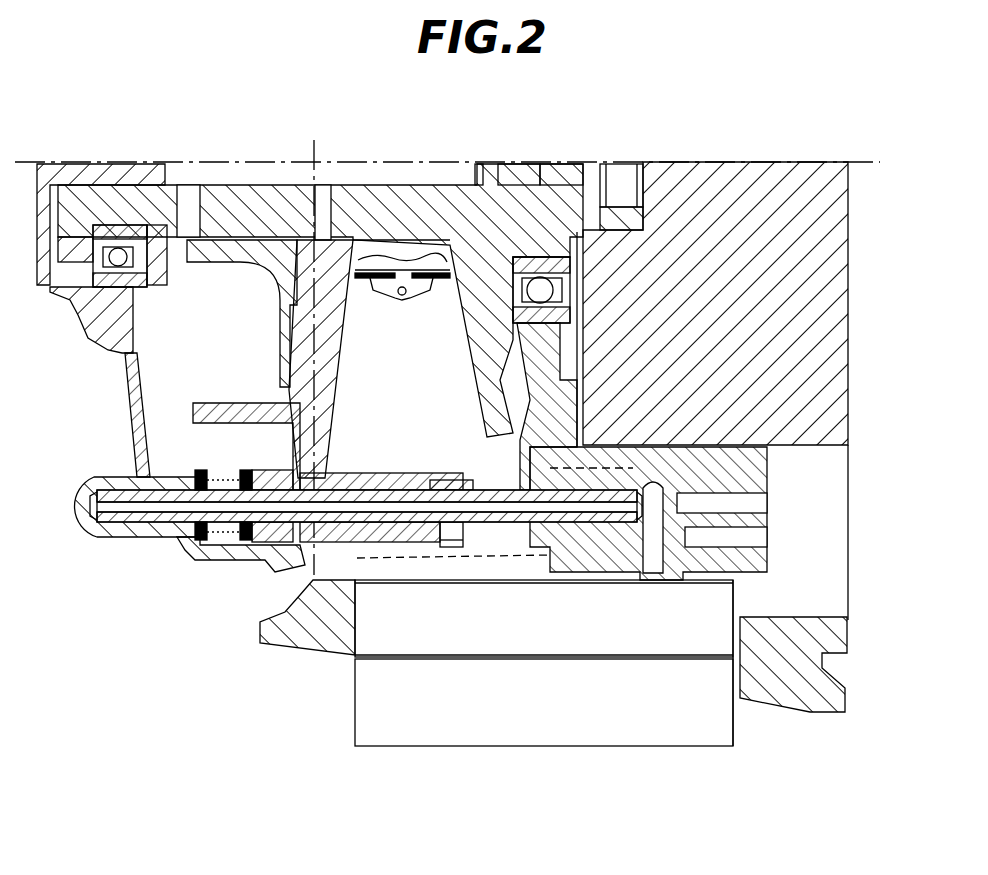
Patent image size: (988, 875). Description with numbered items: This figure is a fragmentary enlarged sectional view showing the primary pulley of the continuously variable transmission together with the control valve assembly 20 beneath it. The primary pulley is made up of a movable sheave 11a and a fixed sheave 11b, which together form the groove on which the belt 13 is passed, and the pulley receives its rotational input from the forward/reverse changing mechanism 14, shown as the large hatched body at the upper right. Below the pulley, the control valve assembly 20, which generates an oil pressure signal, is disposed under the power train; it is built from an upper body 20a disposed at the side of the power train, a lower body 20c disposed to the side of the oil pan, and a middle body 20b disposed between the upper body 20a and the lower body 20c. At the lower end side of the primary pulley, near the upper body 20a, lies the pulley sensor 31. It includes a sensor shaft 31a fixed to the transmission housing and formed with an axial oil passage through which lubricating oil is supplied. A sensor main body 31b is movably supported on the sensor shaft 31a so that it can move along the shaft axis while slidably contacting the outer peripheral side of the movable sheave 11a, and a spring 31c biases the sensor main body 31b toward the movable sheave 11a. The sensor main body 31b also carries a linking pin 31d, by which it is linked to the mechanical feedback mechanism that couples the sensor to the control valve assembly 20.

The forward/reverse changing mechanism 14 is at (833, 241).
The belt 13 is at (402, 297).
The movable sheave 11a is at (330, 388).
The fixed sheave 11b is at (475, 350).
The pulley sensor 31 is at (502, 538).
The sensor shaft 31a is at (520, 482).
The sensor main body 31b is at (333, 457).
The spring 31c is at (220, 477).
The linking pin 31d is at (450, 548).
The control valve assembly 20 is at (475, 698).
The upper body 20a is at (598, 563).
The middle body 20b is at (682, 633).
The lower body 20c is at (593, 727).